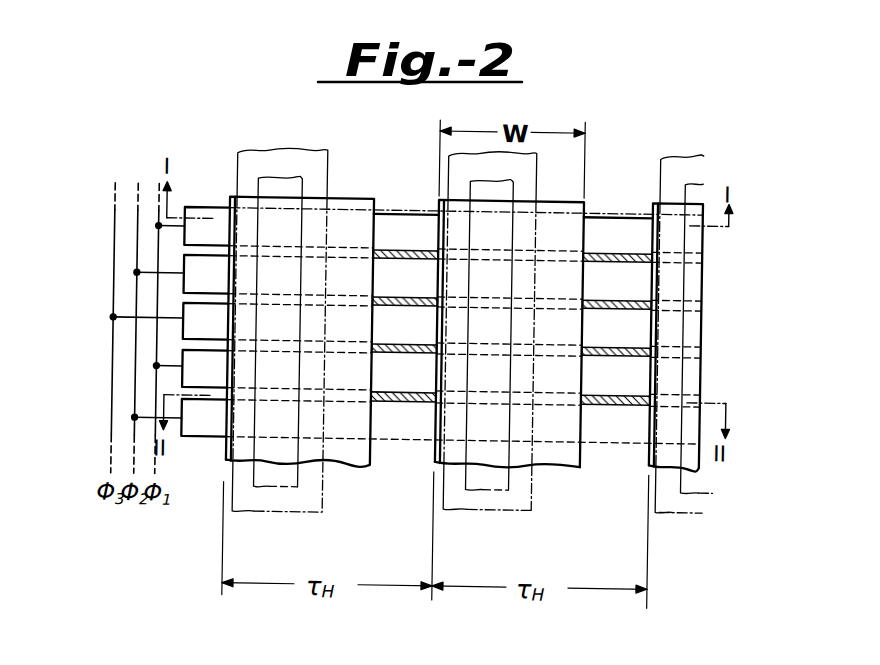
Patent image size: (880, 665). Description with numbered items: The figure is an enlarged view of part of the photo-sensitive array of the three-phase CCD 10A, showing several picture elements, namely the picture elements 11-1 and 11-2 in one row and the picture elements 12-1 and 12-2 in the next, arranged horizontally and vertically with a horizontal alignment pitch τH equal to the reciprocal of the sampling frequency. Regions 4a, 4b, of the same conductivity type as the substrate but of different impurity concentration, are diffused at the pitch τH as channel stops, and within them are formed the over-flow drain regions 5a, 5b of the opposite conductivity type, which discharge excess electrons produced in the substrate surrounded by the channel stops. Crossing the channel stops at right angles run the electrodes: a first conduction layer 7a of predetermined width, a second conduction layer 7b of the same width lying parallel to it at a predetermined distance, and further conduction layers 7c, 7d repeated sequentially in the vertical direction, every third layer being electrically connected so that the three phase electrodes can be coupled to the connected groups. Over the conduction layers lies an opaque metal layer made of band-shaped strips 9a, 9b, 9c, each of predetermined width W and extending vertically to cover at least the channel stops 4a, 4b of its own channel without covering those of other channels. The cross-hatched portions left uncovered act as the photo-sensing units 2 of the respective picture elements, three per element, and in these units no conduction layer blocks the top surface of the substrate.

The CCD 10A is at (358, 136).
The picture element 12-1 is at (228, 492).
The picture element 12-2 is at (734, 564).
The picture element 11-1 is at (428, 194).
The picture element 11-2 is at (645, 194).
The photo-sensing unit 2 is at (380, 347).
The channel stop region 4a is at (299, 505).
The channel stop region 4b is at (460, 506).
The over-flow drain region 5a is at (265, 490).
The over-flow drain region 5b is at (496, 487).
The first conduction layer 7a is at (210, 219).
The second conduction layer 7b is at (188, 276).
The conduction layer 7c is at (192, 331).
The conduction layer 7d is at (186, 382).
The band-shaped strip 9a is at (344, 229).
The band-shaped strip 9b is at (549, 461).
The band-shaped strip 9c is at (687, 389).